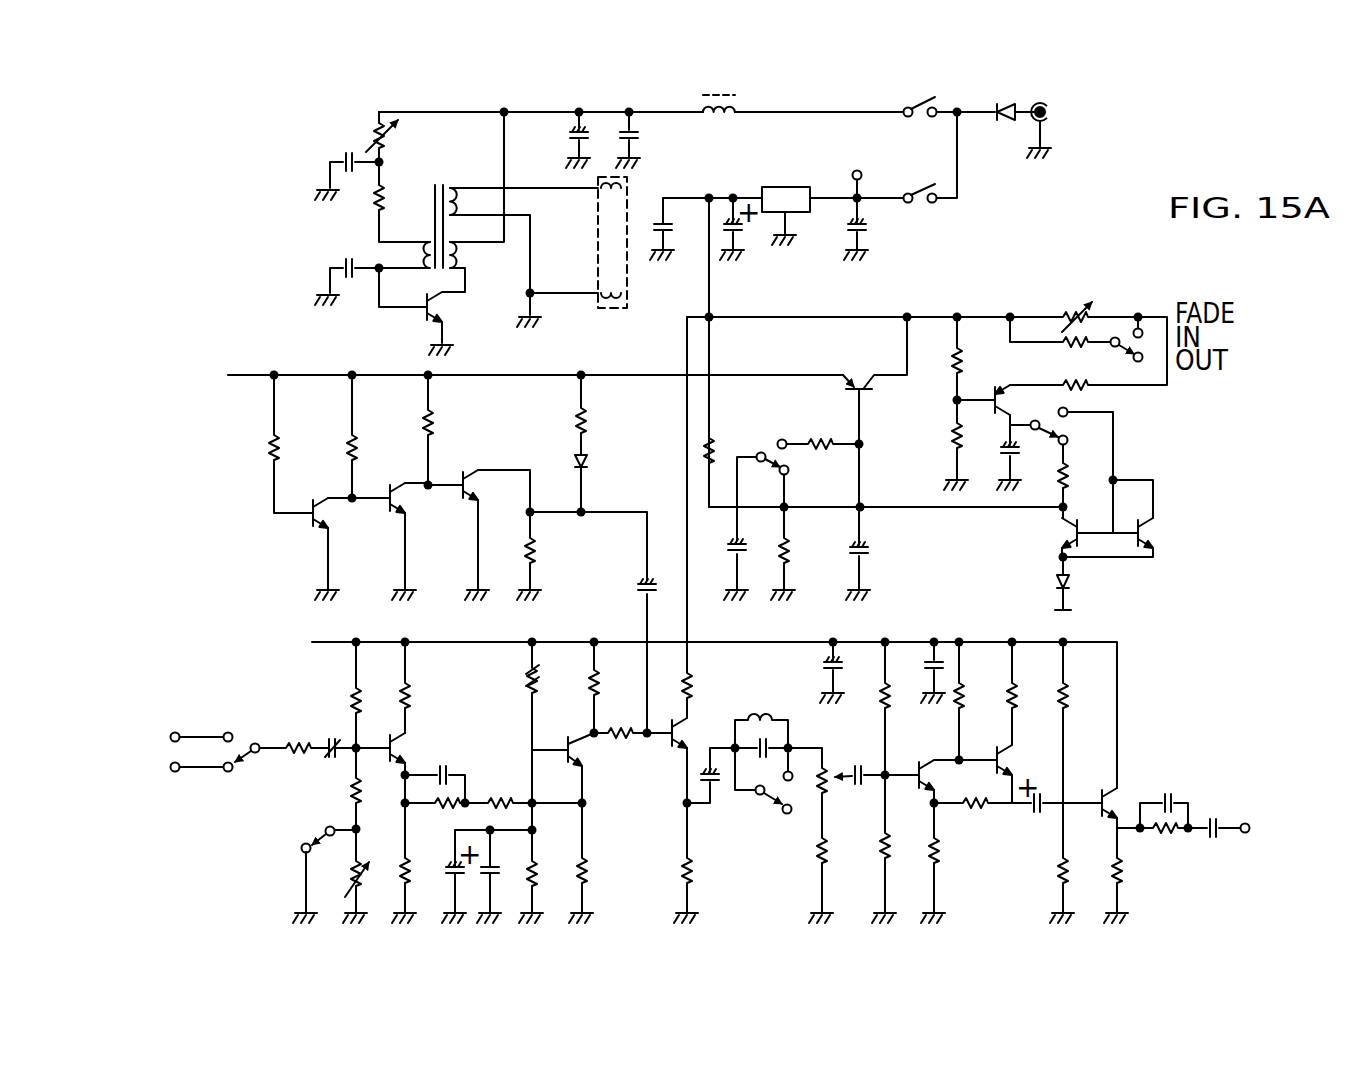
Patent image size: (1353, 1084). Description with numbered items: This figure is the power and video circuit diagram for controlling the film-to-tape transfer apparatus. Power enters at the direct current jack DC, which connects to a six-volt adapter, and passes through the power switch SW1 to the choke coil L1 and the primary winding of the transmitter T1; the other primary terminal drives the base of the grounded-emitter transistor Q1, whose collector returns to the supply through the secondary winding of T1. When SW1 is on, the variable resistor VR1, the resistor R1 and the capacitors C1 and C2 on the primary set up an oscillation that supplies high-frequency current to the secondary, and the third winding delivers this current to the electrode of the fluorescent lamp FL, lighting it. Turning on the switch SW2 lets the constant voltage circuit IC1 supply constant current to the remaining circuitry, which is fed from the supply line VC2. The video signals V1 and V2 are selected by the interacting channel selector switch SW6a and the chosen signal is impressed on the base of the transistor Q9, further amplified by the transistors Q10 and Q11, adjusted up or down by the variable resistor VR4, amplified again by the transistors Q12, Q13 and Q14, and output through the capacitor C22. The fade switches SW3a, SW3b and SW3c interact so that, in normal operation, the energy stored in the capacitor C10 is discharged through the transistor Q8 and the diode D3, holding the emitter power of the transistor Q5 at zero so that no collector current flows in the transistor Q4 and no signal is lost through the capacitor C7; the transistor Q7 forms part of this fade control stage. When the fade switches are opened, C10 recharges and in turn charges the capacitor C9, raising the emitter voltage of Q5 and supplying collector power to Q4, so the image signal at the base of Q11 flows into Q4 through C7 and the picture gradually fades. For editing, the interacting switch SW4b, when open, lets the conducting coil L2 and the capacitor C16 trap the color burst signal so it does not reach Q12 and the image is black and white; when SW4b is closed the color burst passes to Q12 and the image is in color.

The variable resistor VR1 is at (358, 139).
The resistor R1 is at (387, 202).
The capacitor C1 is at (347, 176).
The capacitor C2 is at (349, 283).
The transmitter (transformer) T1 is at (418, 209).
The transistor Q1 is at (453, 323).
The fluorescent lamp FL is at (608, 261).
The choke coil L1 is at (719, 120).
The power switch SW1 is at (916, 122).
The switch SW2 is at (924, 211).
The constant voltage circuit IC1 is at (815, 206).
The direct current jack DC is at (1040, 130).
The transistor Q4 is at (489, 483).
The capacitor C7 is at (638, 596).
The transistor Q5 is at (871, 383).
The fade switch SW3a is at (791, 519).
The capacitor C9 is at (875, 522).
The fade switch SW3c is at (1115, 320).
The fade switch SW3b is at (1070, 425).
The capacitor C10 is at (1027, 466).
The transistor Q7 is at (1081, 534).
The transistor Q8 is at (1128, 518).
The diode D3 is at (1082, 583).
The supply voltage line VC2 is at (276, 642).
The video signal V2 is at (187, 750).
The video signal V1 is at (192, 801).
The interacting channel selector switch SW6a is at (294, 831).
The transistor Q9 is at (403, 745).
The transistor Q10 is at (582, 768).
The transistor Q11 is at (696, 728).
The conducting coil L2 is at (762, 716).
The capacitor C16 is at (761, 762).
The interacting switch SW4b is at (770, 798).
The variable resistor VR4 is at (853, 780).
The transistor Q12 is at (948, 777).
The transistor Q13 is at (1027, 760).
The transistor Q14 is at (1110, 816).
The capacitor C22 is at (1193, 833).